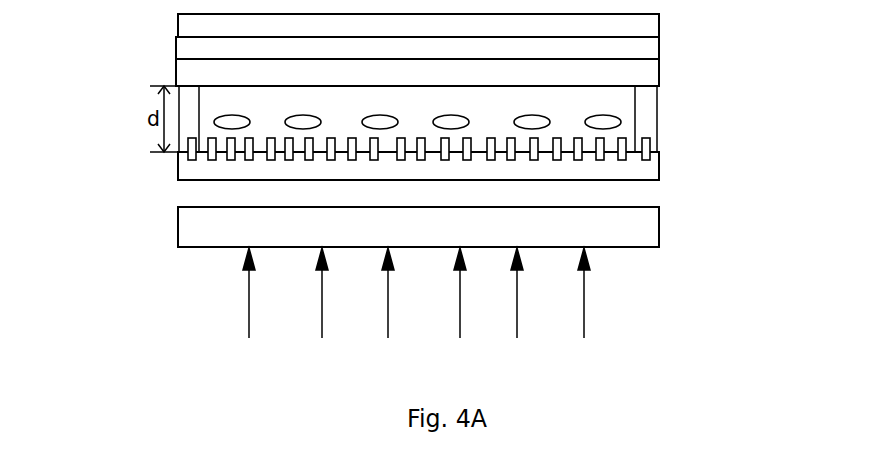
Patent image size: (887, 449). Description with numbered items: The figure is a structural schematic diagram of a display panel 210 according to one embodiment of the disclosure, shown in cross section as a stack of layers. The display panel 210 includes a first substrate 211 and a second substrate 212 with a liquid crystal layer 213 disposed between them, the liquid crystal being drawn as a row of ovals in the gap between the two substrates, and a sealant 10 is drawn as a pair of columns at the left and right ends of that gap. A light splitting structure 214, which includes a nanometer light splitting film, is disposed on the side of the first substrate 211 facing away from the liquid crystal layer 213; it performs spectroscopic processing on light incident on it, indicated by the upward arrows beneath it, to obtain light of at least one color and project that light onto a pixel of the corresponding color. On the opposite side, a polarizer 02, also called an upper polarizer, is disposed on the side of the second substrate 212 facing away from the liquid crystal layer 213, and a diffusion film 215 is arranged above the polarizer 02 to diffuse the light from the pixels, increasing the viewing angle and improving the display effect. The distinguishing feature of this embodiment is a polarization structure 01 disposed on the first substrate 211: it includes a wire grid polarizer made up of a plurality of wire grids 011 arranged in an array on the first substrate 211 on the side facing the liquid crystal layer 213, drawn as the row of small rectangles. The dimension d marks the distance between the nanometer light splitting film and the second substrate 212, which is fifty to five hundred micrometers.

The display panel 210 is at (524, 119).
The first substrate 211 is at (659, 163).
The second substrate 212 is at (659, 72).
The liquid crystal layer 213 is at (635, 126).
The light splitting structure 214 is at (659, 237).
The diffusion film 215 is at (659, 23).
The polarizer 02 is at (659, 43).
The sealant 10 is at (657, 105).
The polarization structure 01 is at (331, 222).
The wire grids 011 is at (250, 160).